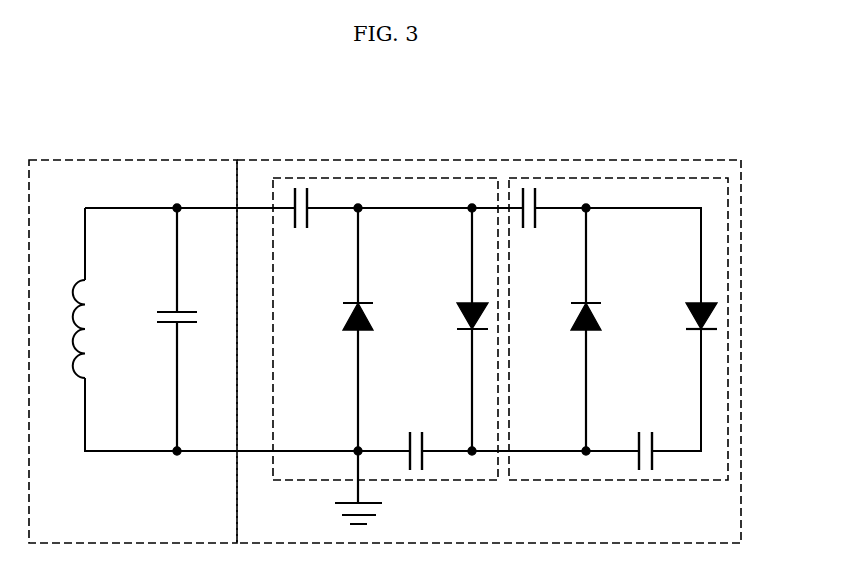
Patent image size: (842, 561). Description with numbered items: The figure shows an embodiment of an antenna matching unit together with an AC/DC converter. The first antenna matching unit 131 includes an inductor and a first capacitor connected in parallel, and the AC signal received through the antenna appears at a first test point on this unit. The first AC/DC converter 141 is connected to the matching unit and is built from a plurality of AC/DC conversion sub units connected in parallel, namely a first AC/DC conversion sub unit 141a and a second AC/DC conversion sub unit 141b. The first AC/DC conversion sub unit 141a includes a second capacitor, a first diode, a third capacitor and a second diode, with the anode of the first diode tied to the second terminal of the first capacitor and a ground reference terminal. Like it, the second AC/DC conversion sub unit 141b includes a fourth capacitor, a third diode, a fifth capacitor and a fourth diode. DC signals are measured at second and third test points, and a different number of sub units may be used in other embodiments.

The first antenna matching unit 131 is at (137, 160).
The first AC/DC converter 141 is at (500, 160).
The first AC/DC conversion sub unit 141a is at (385, 178).
The second AC/DC conversion sub unit 141b is at (617, 178).